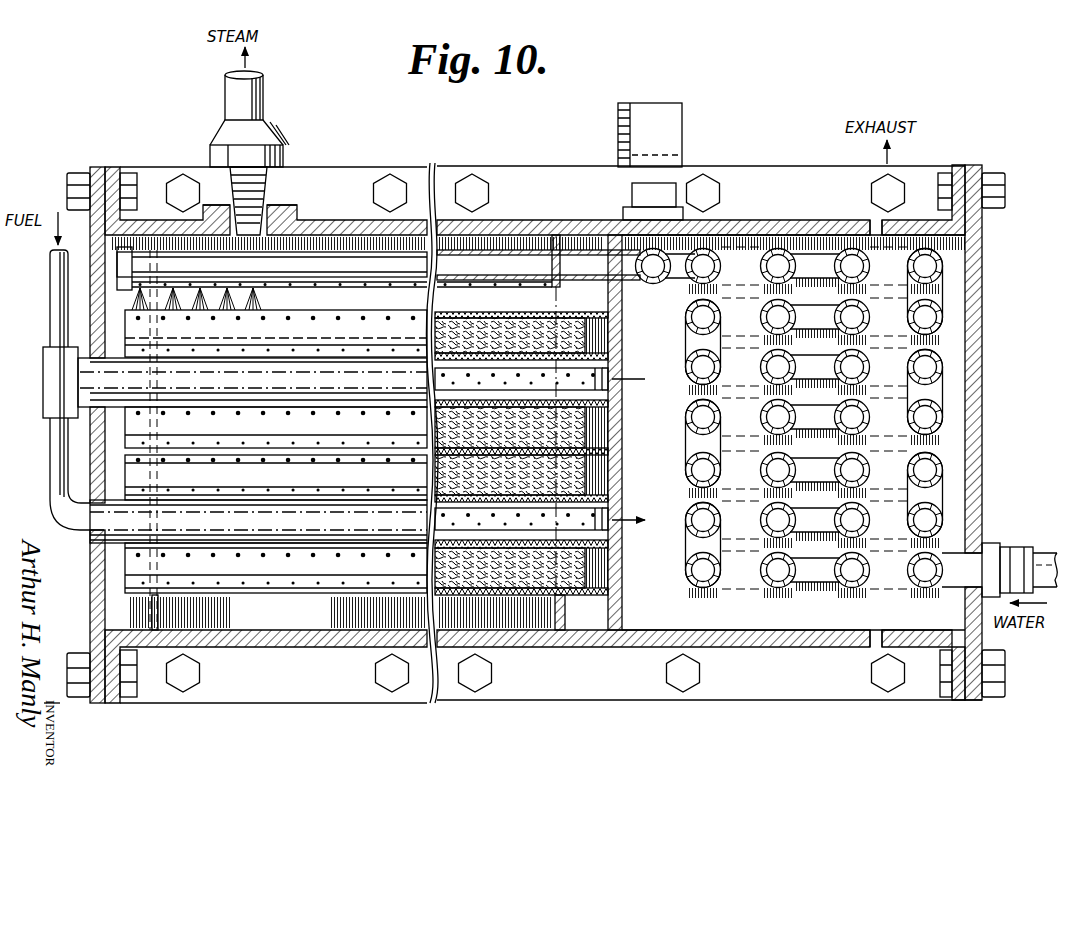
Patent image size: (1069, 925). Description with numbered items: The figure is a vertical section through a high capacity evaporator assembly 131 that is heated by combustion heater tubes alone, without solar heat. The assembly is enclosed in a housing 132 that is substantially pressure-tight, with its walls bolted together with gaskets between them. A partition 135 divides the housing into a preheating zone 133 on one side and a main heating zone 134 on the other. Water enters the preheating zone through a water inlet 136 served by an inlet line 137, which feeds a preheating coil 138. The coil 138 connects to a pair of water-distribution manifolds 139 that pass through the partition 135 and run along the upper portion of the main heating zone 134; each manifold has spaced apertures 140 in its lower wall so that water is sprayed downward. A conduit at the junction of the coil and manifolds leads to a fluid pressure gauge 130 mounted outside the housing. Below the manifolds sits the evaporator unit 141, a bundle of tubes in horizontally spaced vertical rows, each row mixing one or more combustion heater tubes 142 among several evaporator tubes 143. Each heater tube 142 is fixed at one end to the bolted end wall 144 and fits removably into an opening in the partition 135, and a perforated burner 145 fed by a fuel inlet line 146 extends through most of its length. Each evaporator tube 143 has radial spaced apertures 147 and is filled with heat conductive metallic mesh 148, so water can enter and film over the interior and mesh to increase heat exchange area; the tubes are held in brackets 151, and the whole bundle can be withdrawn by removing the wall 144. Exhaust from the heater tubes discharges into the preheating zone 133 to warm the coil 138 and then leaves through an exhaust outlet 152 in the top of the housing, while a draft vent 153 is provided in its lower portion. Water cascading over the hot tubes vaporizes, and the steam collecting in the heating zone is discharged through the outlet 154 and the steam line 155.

The fluid pressure gauge 130 is at (655, 103).
The evaporator assembly 131 is at (983, 320).
The housing 132 is at (975, 268).
The preheating zone 133 is at (945, 338).
The main heating zone 134 is at (509, 243).
The partition 135 is at (615, 478).
The water inlet 136 is at (988, 556).
The inlet line 137 is at (1048, 556).
The preheating coil 138 is at (943, 387).
The water-distribution manifold 139 is at (353, 252).
The spaced apertures 140 is at (352, 282).
The evaporator unit 141 is at (335, 595).
The combustion heater tube 142 is at (70, 372).
The evaporator tube 143 is at (351, 318).
The end wall 144 is at (93, 585).
The perforated burner 145 is at (211, 372).
The fuel inlet line 146 is at (58, 292).
The spaced apertures 147 is at (313, 331).
The heat conductive metallic mesh 148 is at (465, 318).
The bracket 151 is at (153, 596).
The exhaust outlet 152 is at (877, 221).
The draft vent 153 is at (882, 647).
The outlet 154 is at (276, 208).
The steam line 155 is at (226, 93).